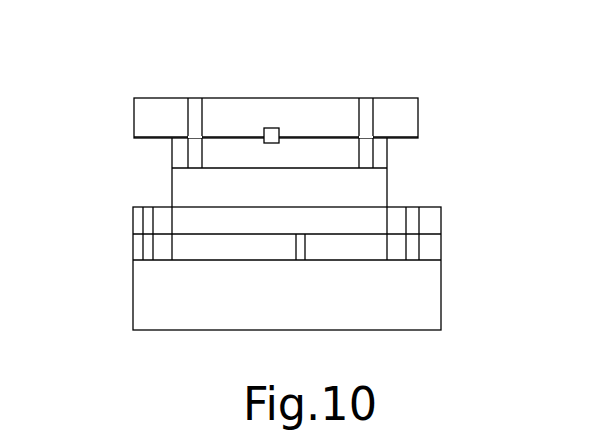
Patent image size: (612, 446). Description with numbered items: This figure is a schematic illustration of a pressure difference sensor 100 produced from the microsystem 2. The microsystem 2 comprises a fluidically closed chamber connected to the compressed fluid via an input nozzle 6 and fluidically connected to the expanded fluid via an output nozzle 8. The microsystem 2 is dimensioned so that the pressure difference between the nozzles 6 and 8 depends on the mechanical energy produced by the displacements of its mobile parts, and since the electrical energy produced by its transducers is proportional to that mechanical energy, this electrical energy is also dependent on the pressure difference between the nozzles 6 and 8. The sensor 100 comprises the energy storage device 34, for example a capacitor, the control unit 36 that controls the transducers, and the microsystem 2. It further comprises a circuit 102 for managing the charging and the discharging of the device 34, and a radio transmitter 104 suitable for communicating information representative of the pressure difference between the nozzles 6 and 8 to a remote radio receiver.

The pressure difference sensor 100 is at (290, 178).
The microsystem 2 is at (367, 193).
The input nozzle 6 is at (198, 112).
The output nozzle 8 is at (365, 107).
The electrical energy storage device 34 is at (412, 296).
The control unit 36 is at (193, 247).
The circuit for managing charging and discharging 102 is at (370, 250).
The radio transmitter 104 is at (192, 225).